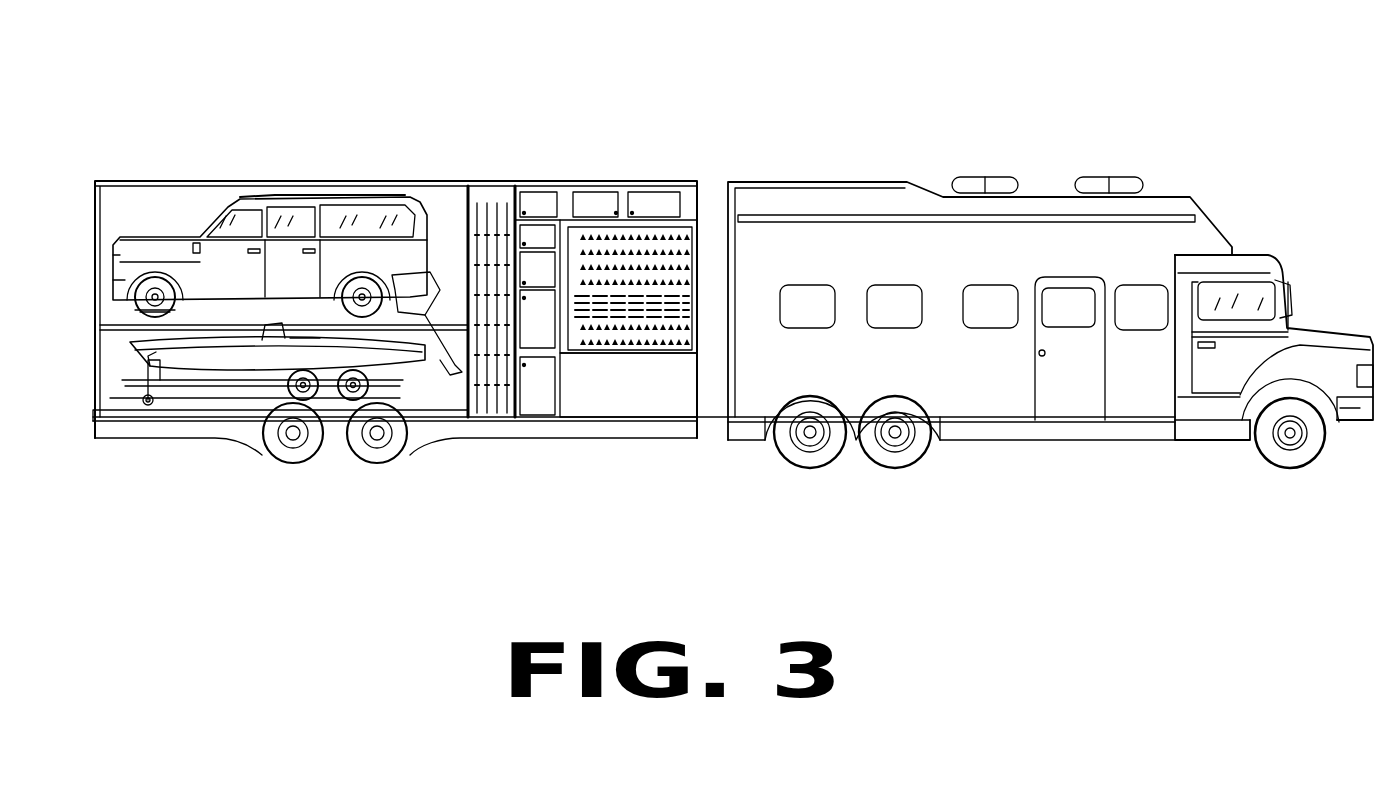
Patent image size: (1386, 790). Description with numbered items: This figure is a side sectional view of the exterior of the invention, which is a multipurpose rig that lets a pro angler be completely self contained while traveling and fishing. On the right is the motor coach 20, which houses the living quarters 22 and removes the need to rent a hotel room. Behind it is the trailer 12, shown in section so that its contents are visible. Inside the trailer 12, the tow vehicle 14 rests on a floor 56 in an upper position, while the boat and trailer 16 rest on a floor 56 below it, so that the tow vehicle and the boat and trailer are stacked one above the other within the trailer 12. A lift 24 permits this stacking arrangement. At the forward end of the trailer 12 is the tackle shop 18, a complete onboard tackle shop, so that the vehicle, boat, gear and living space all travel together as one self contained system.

The trailer 12 is at (590, 182).
The tow vehicle 14 is at (313, 217).
The boat and trailer 16 is at (340, 397).
The tackle shop 18 is at (593, 402).
The motor coach 20 is at (1103, 200).
The living quarters 22 is at (893, 240).
The lift 24 is at (87, 410).
The floor 56 is at (170, 300).